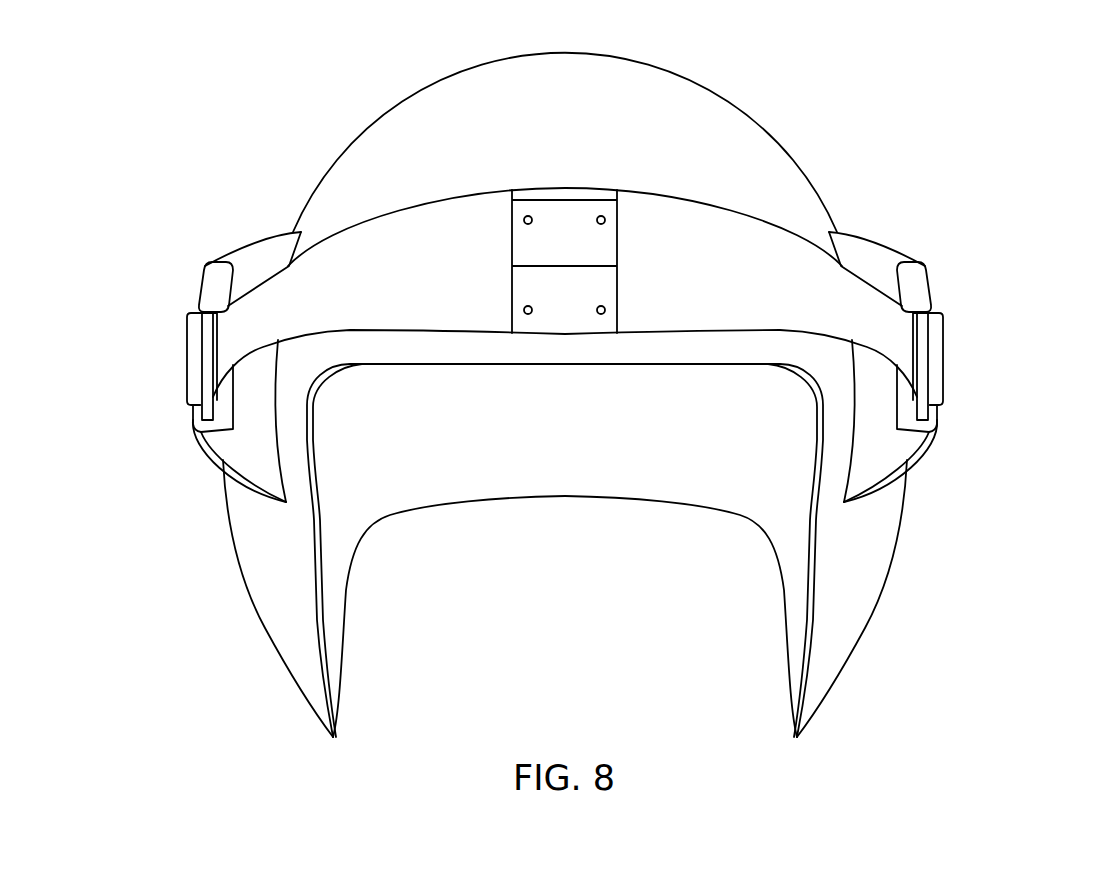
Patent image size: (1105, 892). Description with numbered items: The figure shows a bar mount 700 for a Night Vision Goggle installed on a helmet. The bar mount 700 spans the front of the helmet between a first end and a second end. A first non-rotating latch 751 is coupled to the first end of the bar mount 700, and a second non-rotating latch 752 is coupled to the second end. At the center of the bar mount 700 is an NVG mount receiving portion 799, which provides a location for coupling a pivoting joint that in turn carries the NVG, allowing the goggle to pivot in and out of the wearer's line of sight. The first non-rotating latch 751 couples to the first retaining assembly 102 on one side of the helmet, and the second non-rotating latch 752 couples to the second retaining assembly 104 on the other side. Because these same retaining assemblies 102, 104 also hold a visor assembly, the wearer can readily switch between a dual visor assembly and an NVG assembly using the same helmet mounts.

The bar mount 700 is at (777, 250).
The NVG mount receiving portion 799 is at (574, 217).
The second retaining assembly 104 is at (217, 273).
The first retaining assembly 102 is at (912, 287).
The second non-rotating latch 752 is at (187, 373).
The first non-rotating latch 751 is at (943, 380).